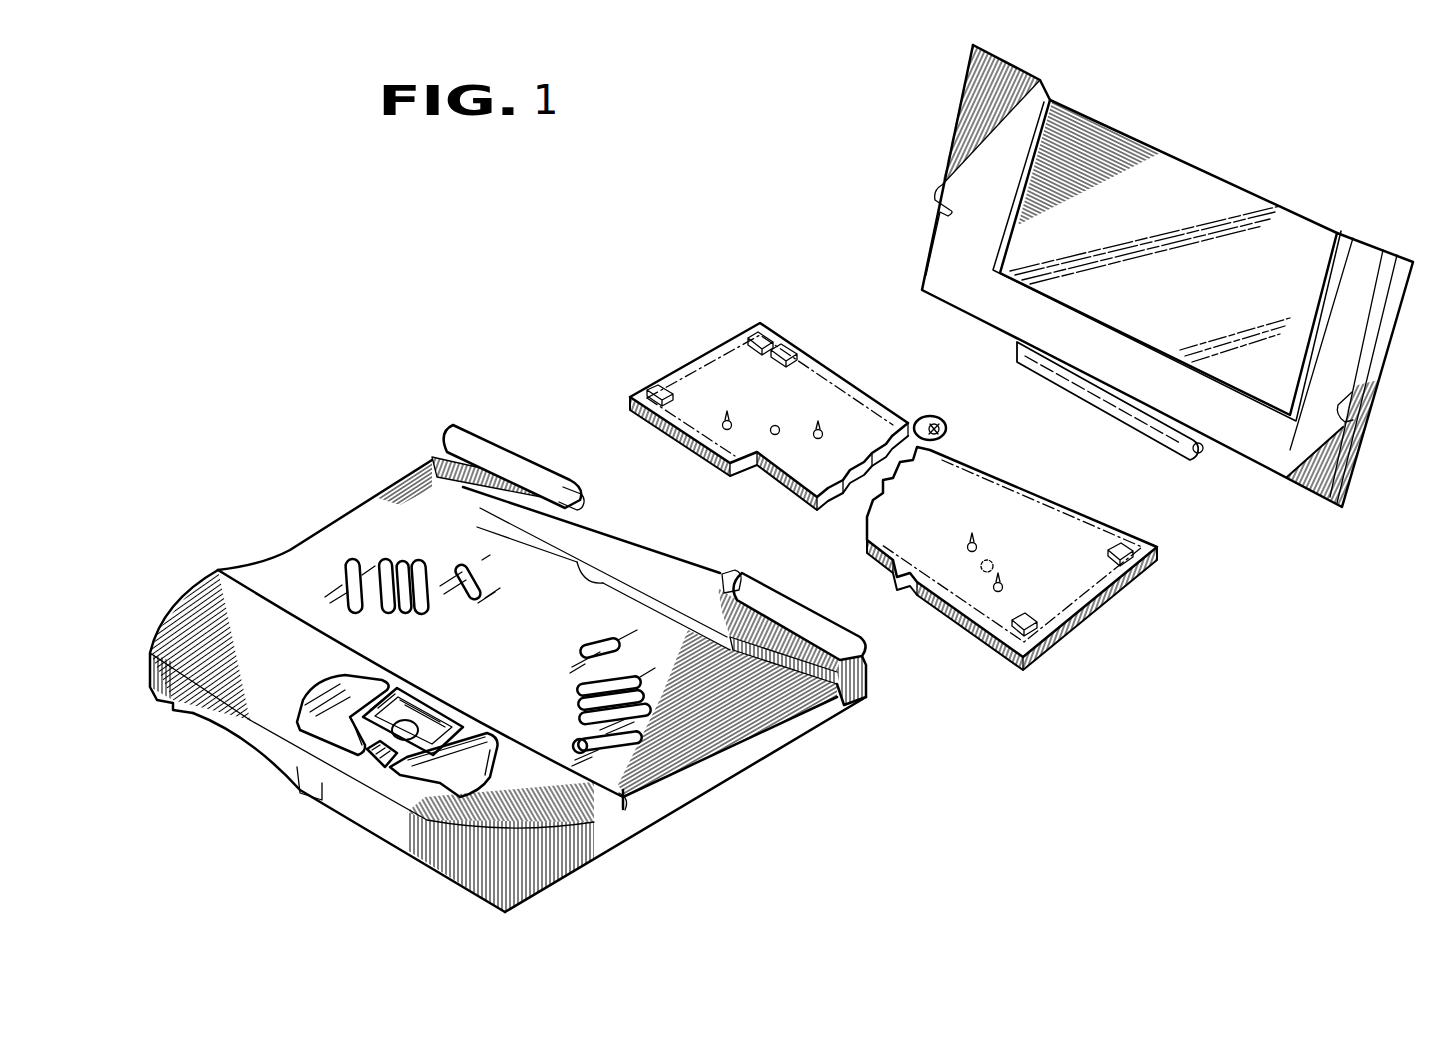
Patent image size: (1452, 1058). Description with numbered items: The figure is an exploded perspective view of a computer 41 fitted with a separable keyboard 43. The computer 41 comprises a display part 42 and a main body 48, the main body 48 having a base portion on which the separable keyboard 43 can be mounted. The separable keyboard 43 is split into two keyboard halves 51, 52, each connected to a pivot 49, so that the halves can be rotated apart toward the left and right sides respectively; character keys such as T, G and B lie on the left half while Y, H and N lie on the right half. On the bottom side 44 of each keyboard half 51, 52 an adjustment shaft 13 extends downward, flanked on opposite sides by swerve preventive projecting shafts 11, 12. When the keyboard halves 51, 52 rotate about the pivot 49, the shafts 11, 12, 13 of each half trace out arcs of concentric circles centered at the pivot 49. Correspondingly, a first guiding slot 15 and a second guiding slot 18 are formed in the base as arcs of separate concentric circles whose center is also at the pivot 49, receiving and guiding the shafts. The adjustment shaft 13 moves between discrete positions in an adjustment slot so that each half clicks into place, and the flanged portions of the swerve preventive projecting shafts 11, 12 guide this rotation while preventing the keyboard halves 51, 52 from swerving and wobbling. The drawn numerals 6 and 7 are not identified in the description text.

The keyboard recess 6 is at (695, 757).
The keys 7 is at (670, 685).
The swerve preventive projecting shaft 11 is at (968, 552).
The swerve preventive projecting shaft 12 is at (998, 592).
The adjustment shaft 13 is at (990, 560).
The first guiding slot 15 is at (612, 650).
The second guiding slot 18 is at (657, 778).
The computer 41 is at (1049, 630).
The display part 42 is at (937, 227).
The separable keyboard 43 is at (1049, 597).
The bottom side 44 is at (1063, 633).
The main body 48 is at (508, 674).
The pivot 49 is at (940, 415).
The keyboard half 51 is at (693, 380).
The keyboard half 52 is at (1098, 540).